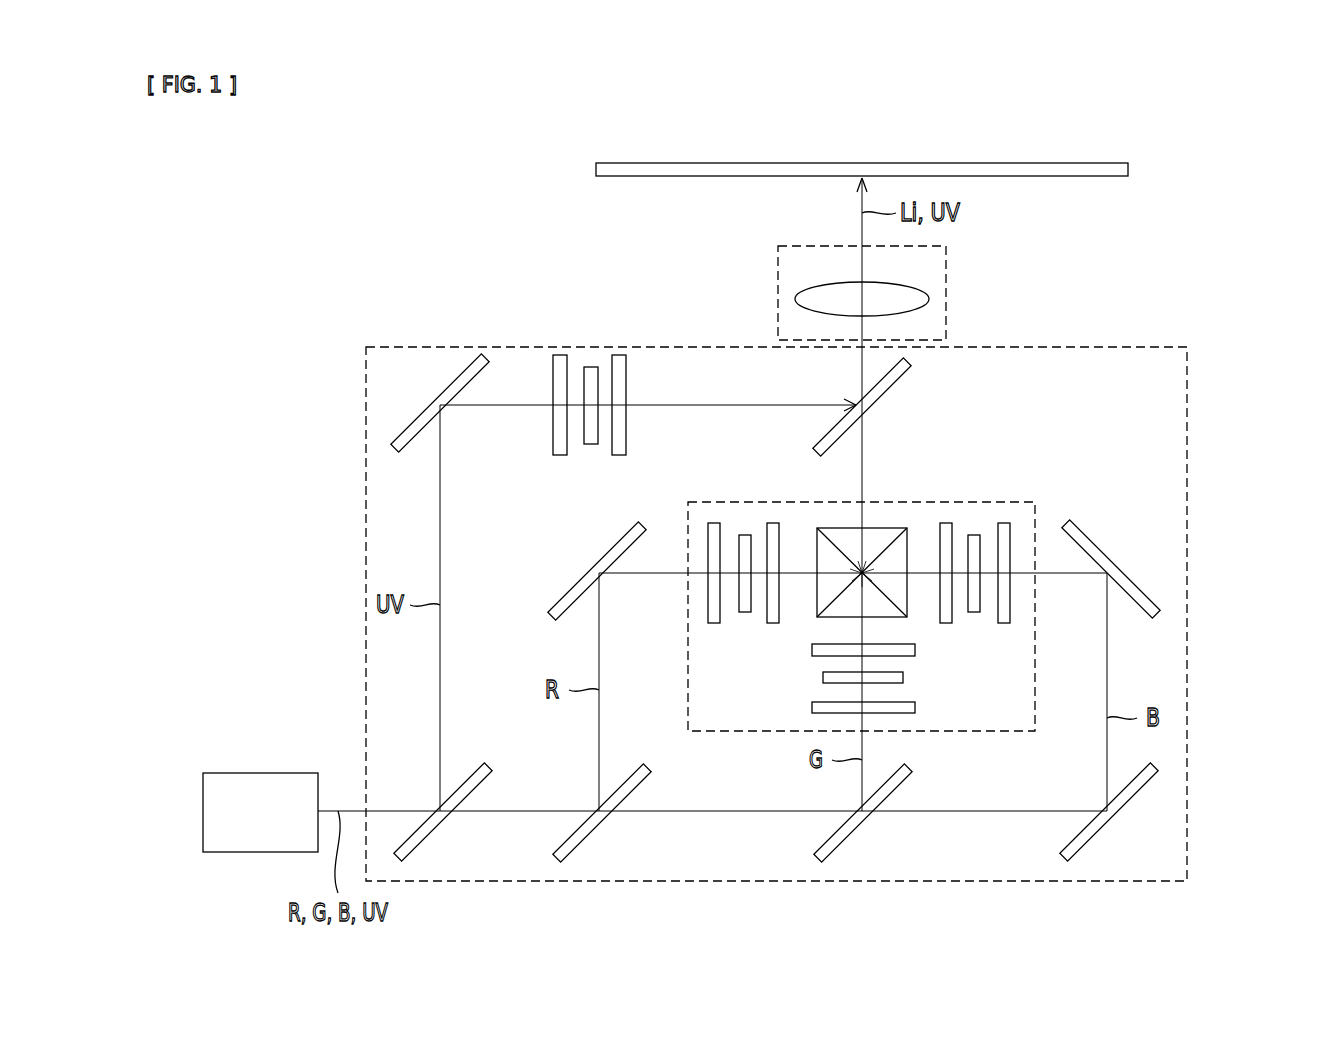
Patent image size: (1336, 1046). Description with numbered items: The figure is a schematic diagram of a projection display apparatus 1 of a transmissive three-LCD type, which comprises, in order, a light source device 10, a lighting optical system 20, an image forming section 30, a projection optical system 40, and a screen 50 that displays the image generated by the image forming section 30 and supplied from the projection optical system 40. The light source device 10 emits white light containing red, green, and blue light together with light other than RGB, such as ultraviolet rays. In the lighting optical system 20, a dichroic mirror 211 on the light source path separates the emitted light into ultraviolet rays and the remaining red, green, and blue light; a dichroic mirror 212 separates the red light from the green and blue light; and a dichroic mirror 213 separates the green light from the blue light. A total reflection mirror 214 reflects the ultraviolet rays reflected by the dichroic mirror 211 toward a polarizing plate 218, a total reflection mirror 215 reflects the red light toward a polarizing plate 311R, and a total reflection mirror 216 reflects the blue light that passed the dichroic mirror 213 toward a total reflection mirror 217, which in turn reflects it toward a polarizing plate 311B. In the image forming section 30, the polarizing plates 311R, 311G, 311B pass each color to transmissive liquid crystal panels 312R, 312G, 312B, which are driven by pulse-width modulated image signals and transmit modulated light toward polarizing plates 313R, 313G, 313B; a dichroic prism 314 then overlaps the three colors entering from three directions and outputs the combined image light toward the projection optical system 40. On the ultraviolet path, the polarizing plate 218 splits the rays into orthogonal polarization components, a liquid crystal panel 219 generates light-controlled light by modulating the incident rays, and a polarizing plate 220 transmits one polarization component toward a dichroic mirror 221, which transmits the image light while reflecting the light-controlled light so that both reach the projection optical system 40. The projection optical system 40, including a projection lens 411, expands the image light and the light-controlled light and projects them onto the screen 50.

The projection display apparatus 1 is at (1168, 140).
The light source device 10 is at (262, 773).
The lighting optical system 20 is at (1187, 505).
The image forming section 30 is at (1035, 668).
The projection optical system 40 is at (946, 292).
The screen 50 is at (596, 170).
The dichroic mirror 211 is at (488, 769).
The dichroic mirror 212 is at (647, 770).
The dichroic mirror 213 is at (821, 859).
The total reflection mirror 214 is at (483, 358).
The total reflection mirror 215 is at (639, 527).
The total reflection mirror 216 is at (1067, 858).
The total reflection mirror 217 is at (1071, 526).
The polarizing plate 218 is at (560, 355).
The liquid crystal panel 219 is at (591, 367).
The polarizing plate 220 is at (619, 355).
The dichroic mirror 221 is at (905, 366).
The polarizing plate 311R is at (714, 523).
The liquid crystal panel 312R is at (745, 535).
The polarizing plate 313R is at (773, 523).
The polarizing plate 311G is at (812, 707).
The liquid crystal panel 312G is at (823, 677).
The polarizing plate 313G is at (812, 650).
The polarizing plate 311B is at (1004, 523).
The liquid crystal panel 312B is at (974, 535).
The polarizing plate 313B is at (946, 523).
The dichroic prism 314 is at (888, 528).
The projection lens 411 is at (795, 299).